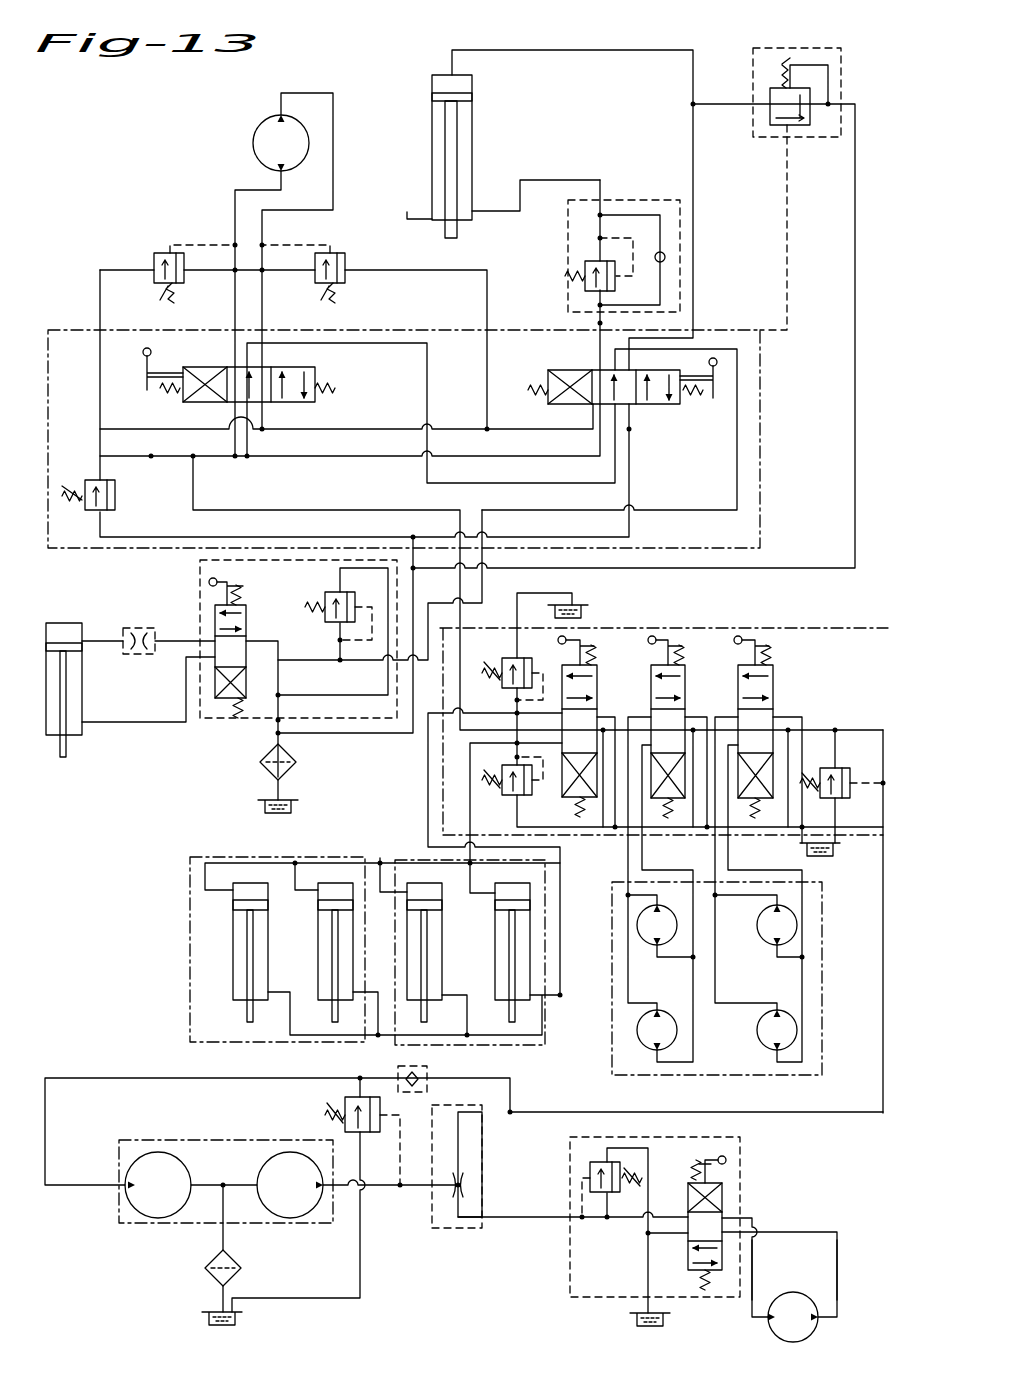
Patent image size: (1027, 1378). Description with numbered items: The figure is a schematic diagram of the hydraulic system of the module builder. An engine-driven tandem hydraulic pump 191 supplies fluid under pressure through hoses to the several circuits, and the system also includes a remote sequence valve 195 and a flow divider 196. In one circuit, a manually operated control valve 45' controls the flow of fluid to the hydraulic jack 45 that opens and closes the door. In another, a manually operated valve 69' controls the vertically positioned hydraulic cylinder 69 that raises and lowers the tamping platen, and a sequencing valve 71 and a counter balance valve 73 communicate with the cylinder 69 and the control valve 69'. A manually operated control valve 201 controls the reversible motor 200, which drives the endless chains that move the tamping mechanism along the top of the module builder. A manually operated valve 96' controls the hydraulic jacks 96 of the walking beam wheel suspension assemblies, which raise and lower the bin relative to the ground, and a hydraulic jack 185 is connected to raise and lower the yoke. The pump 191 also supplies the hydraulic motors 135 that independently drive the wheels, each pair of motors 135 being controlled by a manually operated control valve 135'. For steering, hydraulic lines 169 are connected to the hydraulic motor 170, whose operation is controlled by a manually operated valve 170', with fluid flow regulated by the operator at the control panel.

The reversible motor 200 is at (253, 137).
The hydraulic cylinder 69 is at (474, 156).
The counter balance valve 73 is at (568, 260).
The sequencing valve 71 is at (753, 121).
The control valve 201 is at (313, 365).
The manually operated valve 69' is at (608, 370).
The hydraulic jack 45 is at (62, 666).
The control valve 45' is at (259, 642).
The manually operated valve 96' is at (601, 726).
The control valve 135' is at (710, 727).
The hydraulic jack 185 is at (300, 925).
The hydraulic jack 96 is at (470, 952).
The motor 135 is at (717, 978).
The tandem hydraulic pump 191 is at (197, 1140).
The remote sequence valve 195 is at (345, 1105).
The flow divider 196 is at (482, 1155).
The manually operated valve 170' is at (655, 1217).
The hydraulic lines 169 is at (837, 1258).
The hydraulic motor 170 is at (777, 1328).